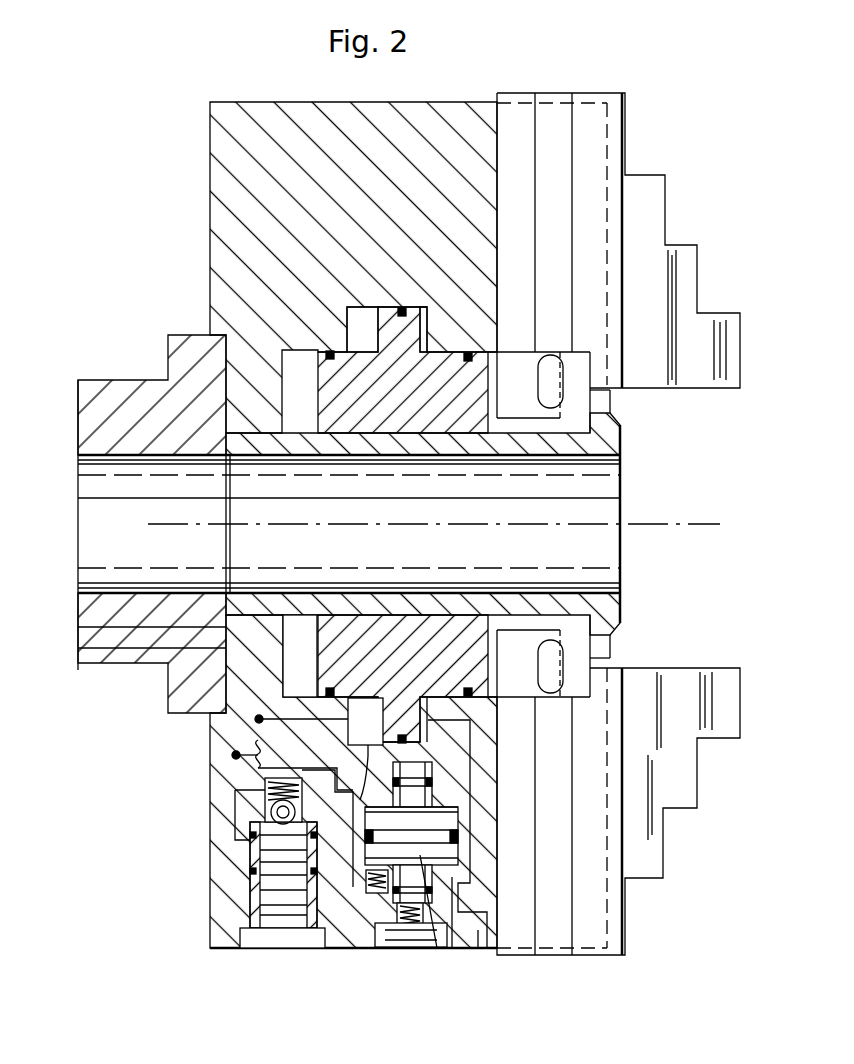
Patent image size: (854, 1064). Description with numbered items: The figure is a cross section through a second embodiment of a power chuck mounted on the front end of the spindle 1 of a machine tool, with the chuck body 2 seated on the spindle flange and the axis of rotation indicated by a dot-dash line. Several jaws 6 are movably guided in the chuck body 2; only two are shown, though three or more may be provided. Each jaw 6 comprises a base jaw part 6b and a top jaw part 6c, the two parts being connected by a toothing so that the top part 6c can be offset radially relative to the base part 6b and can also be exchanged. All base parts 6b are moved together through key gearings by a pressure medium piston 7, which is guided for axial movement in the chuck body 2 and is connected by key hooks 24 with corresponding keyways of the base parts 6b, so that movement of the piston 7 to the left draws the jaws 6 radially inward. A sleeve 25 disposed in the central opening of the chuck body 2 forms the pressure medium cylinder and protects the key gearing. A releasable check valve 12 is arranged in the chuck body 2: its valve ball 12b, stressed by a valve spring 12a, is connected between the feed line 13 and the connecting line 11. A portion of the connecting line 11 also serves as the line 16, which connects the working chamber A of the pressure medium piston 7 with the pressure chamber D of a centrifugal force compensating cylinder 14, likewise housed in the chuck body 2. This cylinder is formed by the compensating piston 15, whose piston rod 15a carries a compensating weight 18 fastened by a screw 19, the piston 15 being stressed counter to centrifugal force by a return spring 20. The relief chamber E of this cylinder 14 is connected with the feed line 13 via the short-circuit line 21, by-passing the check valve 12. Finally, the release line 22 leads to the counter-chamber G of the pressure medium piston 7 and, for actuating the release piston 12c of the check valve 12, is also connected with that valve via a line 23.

The spindle 1 is at (125, 395).
The chuck body 2 is at (222, 170).
The jaws 6 is at (595, 156).
The base jaw part 6b is at (556, 118).
The top jaw part 6c is at (679, 258).
The pressure medium piston 7 is at (363, 358).
The counter-chamber G is at (378, 345).
The working chamber A is at (423, 350).
The key hooks 24 is at (490, 378).
The sleeve 25 is at (600, 446).
The release line 22 is at (148, 625).
The feed line 13 is at (132, 650).
The connecting line 11 is at (430, 720).
The short-circuit line 21 is at (313, 757).
The line 23 is at (258, 733).
The releasable check valve 12 is at (255, 895).
The valve spring 12a is at (265, 792).
The valve ball 12b is at (266, 813).
The release piston 12c is at (255, 886).
The line 16 is at (474, 772).
The relief chamber E is at (452, 808).
The centrifugal force compensating cylinder 14 is at (365, 872).
The return spring 20 is at (375, 895).
The compensating weight 18 is at (400, 920).
The screw 19 is at (410, 947).
The compensating piston 15 is at (452, 948).
The piston rod 15a is at (437, 948).
The pressure chamber D is at (480, 948).